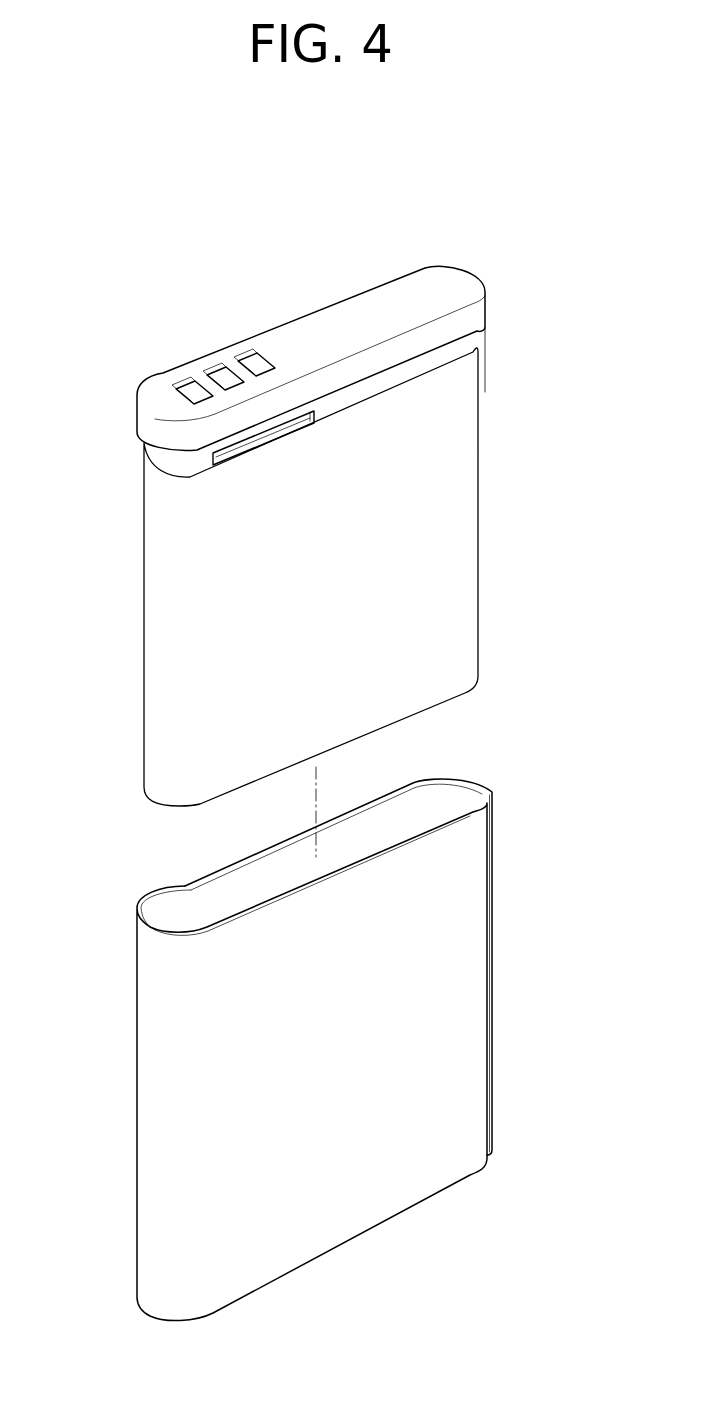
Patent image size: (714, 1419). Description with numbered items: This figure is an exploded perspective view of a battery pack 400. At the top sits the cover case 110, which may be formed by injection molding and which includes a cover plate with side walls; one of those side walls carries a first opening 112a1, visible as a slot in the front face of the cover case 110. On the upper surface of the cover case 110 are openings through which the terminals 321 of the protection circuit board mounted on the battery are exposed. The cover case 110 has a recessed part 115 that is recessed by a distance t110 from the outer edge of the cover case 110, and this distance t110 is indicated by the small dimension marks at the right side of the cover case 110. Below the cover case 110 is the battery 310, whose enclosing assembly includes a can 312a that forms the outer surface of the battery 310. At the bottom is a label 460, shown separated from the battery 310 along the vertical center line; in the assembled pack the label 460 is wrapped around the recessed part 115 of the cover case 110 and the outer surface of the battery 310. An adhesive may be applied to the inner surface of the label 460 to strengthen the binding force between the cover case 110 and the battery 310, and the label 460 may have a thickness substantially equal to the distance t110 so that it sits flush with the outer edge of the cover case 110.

The battery pack 400 is at (504, 187).
The cover case 110 is at (322, 297).
The recessed part 115 is at (406, 376).
The terminals 321 is at (253, 361).
The first opening 112a1 is at (272, 437).
The can 312a is at (443, 494).
The battery 310 is at (370, 577).
The distance t110 is at (462, 391).
The label 460 is at (503, 977).